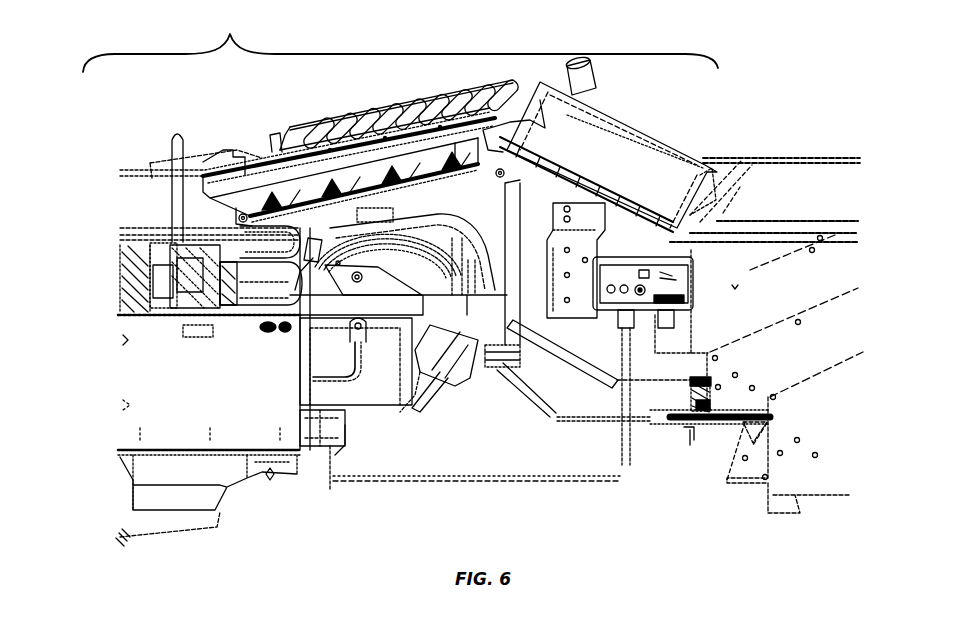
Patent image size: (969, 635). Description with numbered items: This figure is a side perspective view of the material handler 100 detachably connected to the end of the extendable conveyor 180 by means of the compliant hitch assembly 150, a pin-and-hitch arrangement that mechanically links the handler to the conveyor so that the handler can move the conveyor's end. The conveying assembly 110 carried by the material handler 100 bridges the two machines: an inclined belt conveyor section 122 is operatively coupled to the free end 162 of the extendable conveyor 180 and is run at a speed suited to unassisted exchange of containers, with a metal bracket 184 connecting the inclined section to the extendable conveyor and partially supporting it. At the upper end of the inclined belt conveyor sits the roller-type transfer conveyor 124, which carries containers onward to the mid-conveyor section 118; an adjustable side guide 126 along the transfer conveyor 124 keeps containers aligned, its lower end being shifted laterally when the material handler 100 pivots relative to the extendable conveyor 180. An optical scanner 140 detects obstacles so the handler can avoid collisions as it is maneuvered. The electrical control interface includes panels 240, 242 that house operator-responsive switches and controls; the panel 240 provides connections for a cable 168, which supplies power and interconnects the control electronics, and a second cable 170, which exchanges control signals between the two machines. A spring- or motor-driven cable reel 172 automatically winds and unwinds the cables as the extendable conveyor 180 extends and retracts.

The material handler 100 is at (80, 347).
The conveying assembly 110 is at (400, 42).
The mid-conveyor section 118 is at (110, 184).
The inclined belt conveyor section 122 is at (582, 138).
The transfer conveyor 124 is at (312, 113).
The adjustable side guide 126 is at (283, 172).
The optical scanner 140 is at (343, 450).
The compliant hitch assembly 150 is at (480, 385).
The free end of the extendable conveyor 162 is at (543, 298).
The cable 168 is at (657, 380).
The second cable 170 is at (518, 483).
The cable reel 172 is at (410, 322).
The extendable conveyor 180 is at (697, 293).
The metal bracket 184 is at (578, 287).
The panel 240 is at (712, 423).
The panel 242 is at (674, 262).